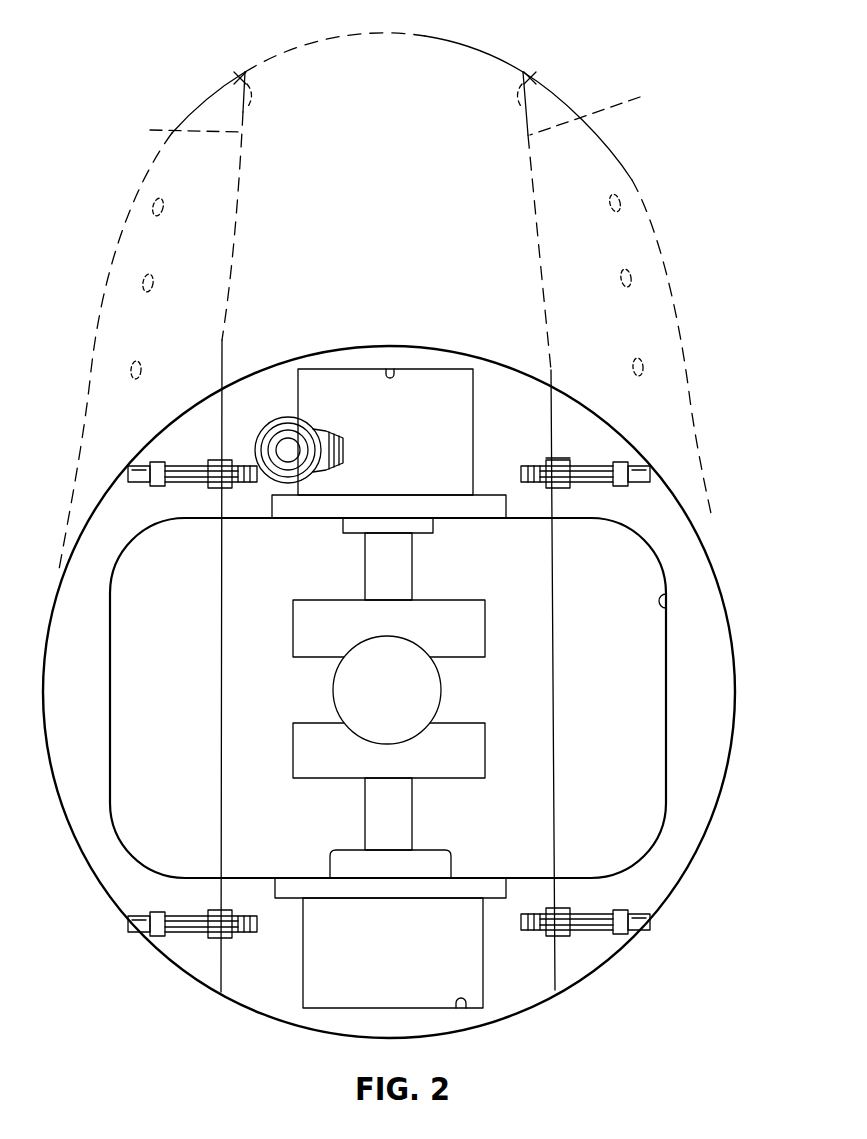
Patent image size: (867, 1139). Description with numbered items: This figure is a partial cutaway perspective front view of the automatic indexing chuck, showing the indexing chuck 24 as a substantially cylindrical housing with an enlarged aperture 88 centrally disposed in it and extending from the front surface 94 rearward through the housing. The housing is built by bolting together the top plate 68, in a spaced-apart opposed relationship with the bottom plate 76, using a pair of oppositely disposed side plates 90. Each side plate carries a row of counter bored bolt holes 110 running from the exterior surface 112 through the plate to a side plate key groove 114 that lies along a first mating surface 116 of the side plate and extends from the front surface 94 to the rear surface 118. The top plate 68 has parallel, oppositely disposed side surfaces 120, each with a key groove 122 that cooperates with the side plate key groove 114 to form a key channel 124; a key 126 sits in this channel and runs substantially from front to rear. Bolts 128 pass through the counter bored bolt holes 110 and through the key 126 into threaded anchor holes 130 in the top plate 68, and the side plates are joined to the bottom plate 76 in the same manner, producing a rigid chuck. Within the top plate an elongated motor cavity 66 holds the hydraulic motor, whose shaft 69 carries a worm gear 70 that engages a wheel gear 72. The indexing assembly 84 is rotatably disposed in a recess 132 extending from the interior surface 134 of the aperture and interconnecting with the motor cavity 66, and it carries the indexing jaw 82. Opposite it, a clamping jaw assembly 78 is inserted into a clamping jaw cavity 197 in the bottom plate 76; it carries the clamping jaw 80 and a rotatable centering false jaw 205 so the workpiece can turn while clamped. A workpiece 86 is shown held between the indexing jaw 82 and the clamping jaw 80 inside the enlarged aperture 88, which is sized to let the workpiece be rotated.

The indexing chuck 24 is at (712, 478).
The elongated motor cavity 66 is at (266, 422).
The top plate 68 is at (397, 151).
The shaft 69 is at (296, 444).
The worm gear 70 is at (287, 421).
The wheel gear 72 is at (338, 452).
The bottom plate 76 is at (535, 971).
The clamping jaw assembly 78 is at (402, 963).
The clamping jaw 80 is at (467, 758).
The indexing jaw 82 is at (467, 635).
The indexing assembly 84 is at (415, 458).
The workpiece 86 is at (399, 702).
The enlarged aperture 88 is at (640, 763).
The side plates 90 is at (137, 303).
The front surface 94 is at (92, 705).
The counter bored bolt holes 110 is at (632, 192).
The exterior surface 112 is at (192, 260).
The side plate key groove 114 is at (212, 488).
The first mating surface 116 is at (236, 78).
The rear surface 118 is at (203, 105).
The side surfaces 120 is at (398, 110).
The key groove 122 is at (548, 460).
The key channel 124 is at (166, 461).
The key 126 is at (231, 489).
The bolts 128 is at (200, 456).
The threaded anchor holes 130 is at (240, 489).
The recess 132 is at (391, 371).
The interior surface 134 is at (662, 605).
The clamping jaw cavity 197 is at (462, 1006).
The centering false jaw 205 is at (360, 857).